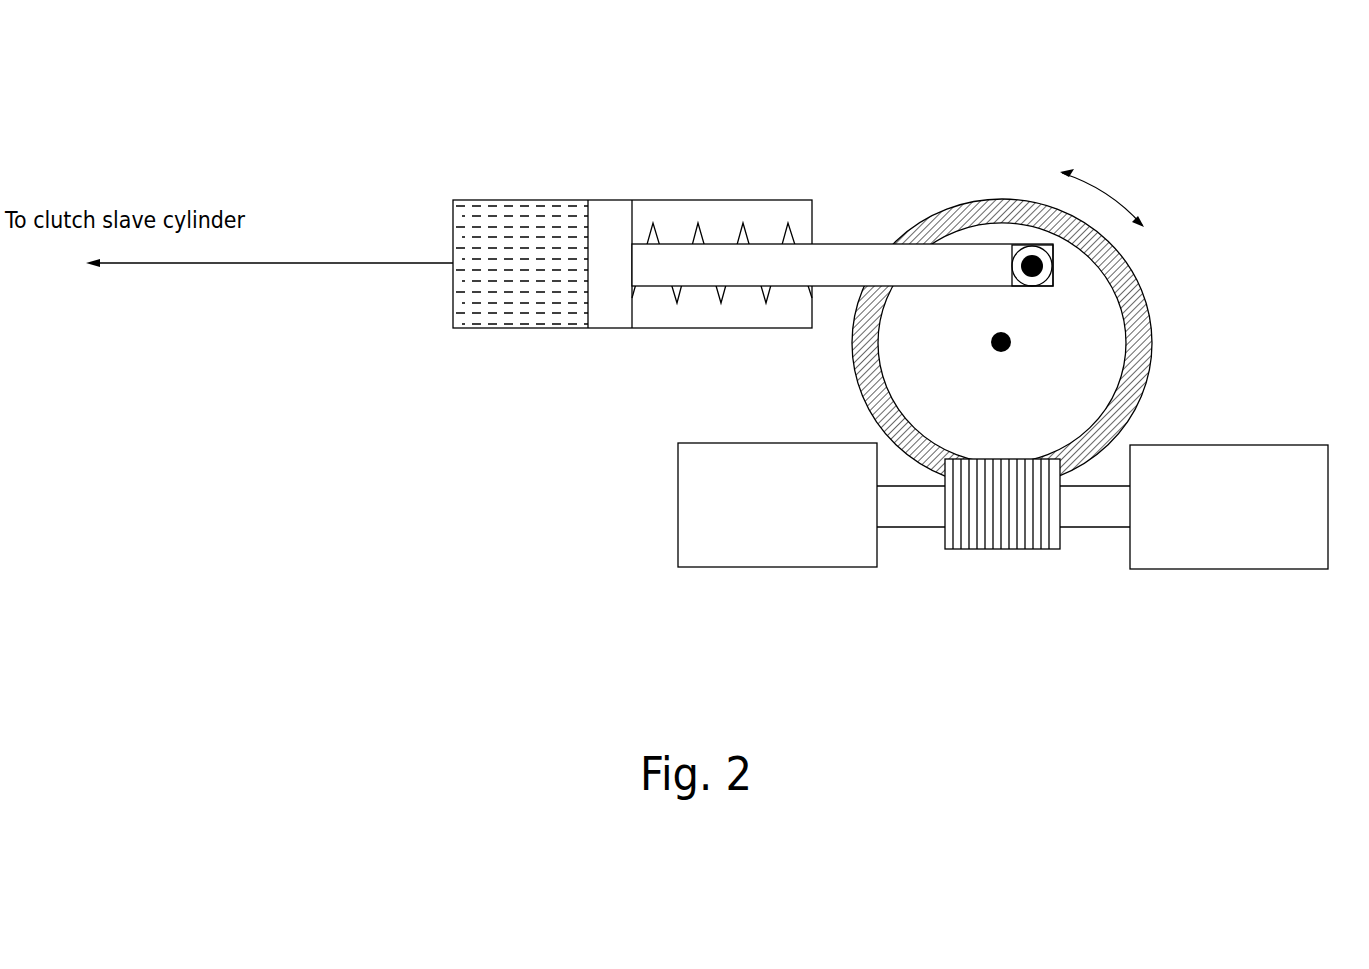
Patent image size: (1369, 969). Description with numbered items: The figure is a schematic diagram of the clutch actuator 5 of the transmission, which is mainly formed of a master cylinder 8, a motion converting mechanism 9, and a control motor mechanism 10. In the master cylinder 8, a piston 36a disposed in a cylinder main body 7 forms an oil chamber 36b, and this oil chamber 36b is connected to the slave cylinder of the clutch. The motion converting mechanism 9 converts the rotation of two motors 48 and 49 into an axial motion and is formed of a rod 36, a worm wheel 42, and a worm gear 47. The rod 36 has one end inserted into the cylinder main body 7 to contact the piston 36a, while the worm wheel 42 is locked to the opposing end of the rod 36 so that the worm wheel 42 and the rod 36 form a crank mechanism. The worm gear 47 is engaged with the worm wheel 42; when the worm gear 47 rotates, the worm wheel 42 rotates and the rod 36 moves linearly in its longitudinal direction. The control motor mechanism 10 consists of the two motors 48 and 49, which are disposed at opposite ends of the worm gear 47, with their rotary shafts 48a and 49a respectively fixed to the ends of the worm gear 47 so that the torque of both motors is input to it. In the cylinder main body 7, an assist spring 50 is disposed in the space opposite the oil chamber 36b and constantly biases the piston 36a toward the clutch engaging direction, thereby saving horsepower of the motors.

The clutch actuator 5 is at (1004, 112).
The cylinder main body 7 is at (693, 200).
The master cylinder 8 is at (642, 277).
The motion converting mechanism 9 is at (1091, 147).
The control motor mechanism 10 is at (594, 597).
The rod 36 is at (847, 262).
The piston 36a is at (609, 318).
The oil chamber 36b is at (505, 313).
The worm wheel 42 is at (1147, 308).
The worm gear 47 is at (998, 542).
The motor 48 is at (741, 600).
The rotary shaft 48a is at (913, 513).
The motor 49 is at (1229, 593).
The rotary shaft 49a is at (1088, 517).
The assist spring 50 is at (750, 233).